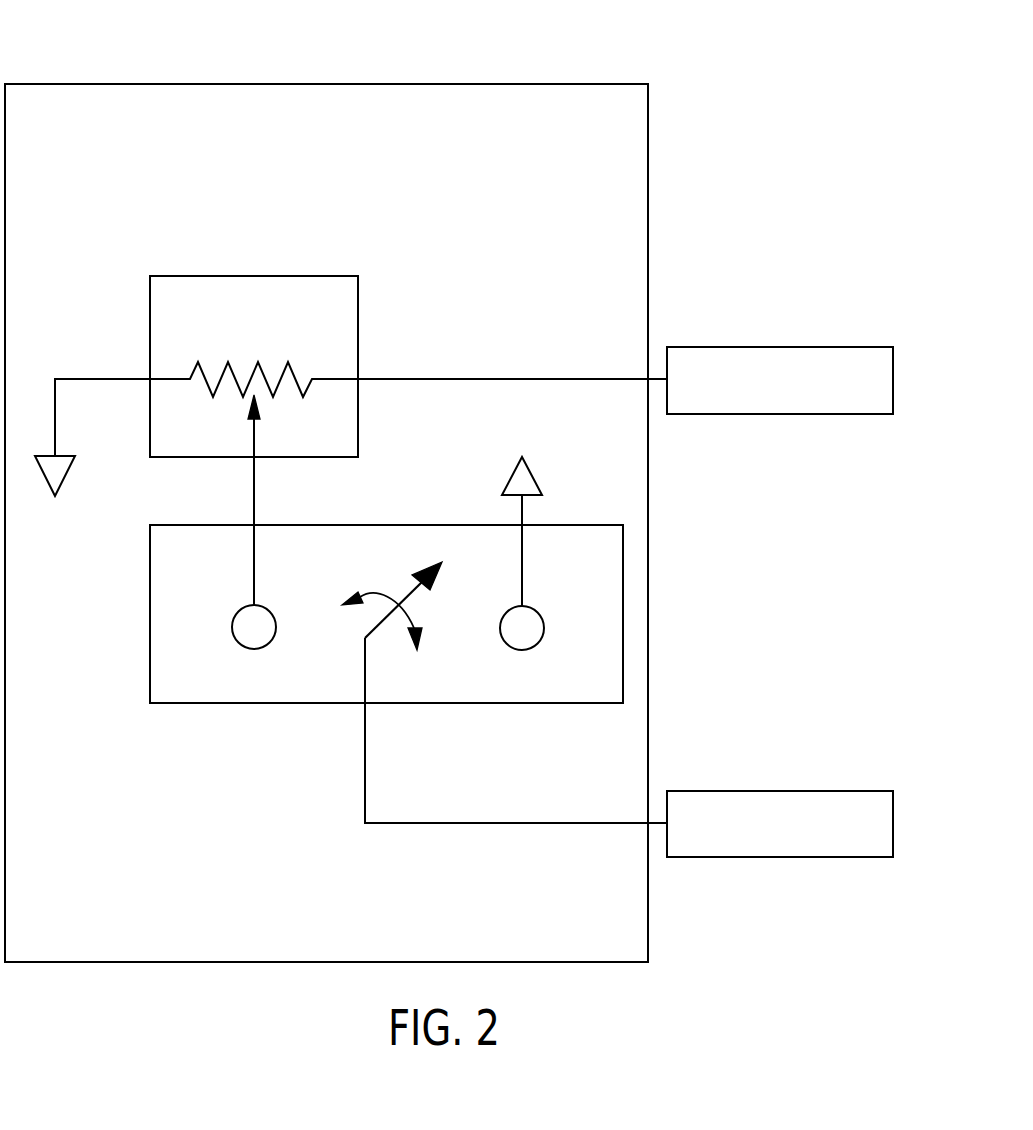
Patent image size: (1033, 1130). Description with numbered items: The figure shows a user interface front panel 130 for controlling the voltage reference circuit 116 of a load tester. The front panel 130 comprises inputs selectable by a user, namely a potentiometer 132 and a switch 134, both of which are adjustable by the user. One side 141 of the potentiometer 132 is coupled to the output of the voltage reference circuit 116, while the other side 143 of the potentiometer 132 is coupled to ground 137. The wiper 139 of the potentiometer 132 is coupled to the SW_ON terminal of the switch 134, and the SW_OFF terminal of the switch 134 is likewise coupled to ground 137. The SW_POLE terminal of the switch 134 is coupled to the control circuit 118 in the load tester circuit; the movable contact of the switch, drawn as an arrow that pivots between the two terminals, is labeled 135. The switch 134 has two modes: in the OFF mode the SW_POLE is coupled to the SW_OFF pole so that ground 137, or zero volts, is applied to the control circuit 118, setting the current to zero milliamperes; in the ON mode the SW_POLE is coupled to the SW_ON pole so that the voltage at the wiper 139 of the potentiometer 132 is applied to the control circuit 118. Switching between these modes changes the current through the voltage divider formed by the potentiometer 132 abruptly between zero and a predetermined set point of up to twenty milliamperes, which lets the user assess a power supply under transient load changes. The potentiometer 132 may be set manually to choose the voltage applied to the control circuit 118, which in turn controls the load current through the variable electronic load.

The front panel 130 is at (96, 83).
The potentiometer 132 is at (254, 275).
The switch 134 is at (625, 612).
The switch lever 135 is at (383, 626).
The ground 137 is at (68, 473).
The wiper 139 is at (250, 505).
The one side of the potentiometer 141 is at (450, 378).
The other side of the potentiometer 143 is at (87, 378).
The voltage reference circuit 116 is at (780, 346).
The control circuit 118 is at (780, 790).